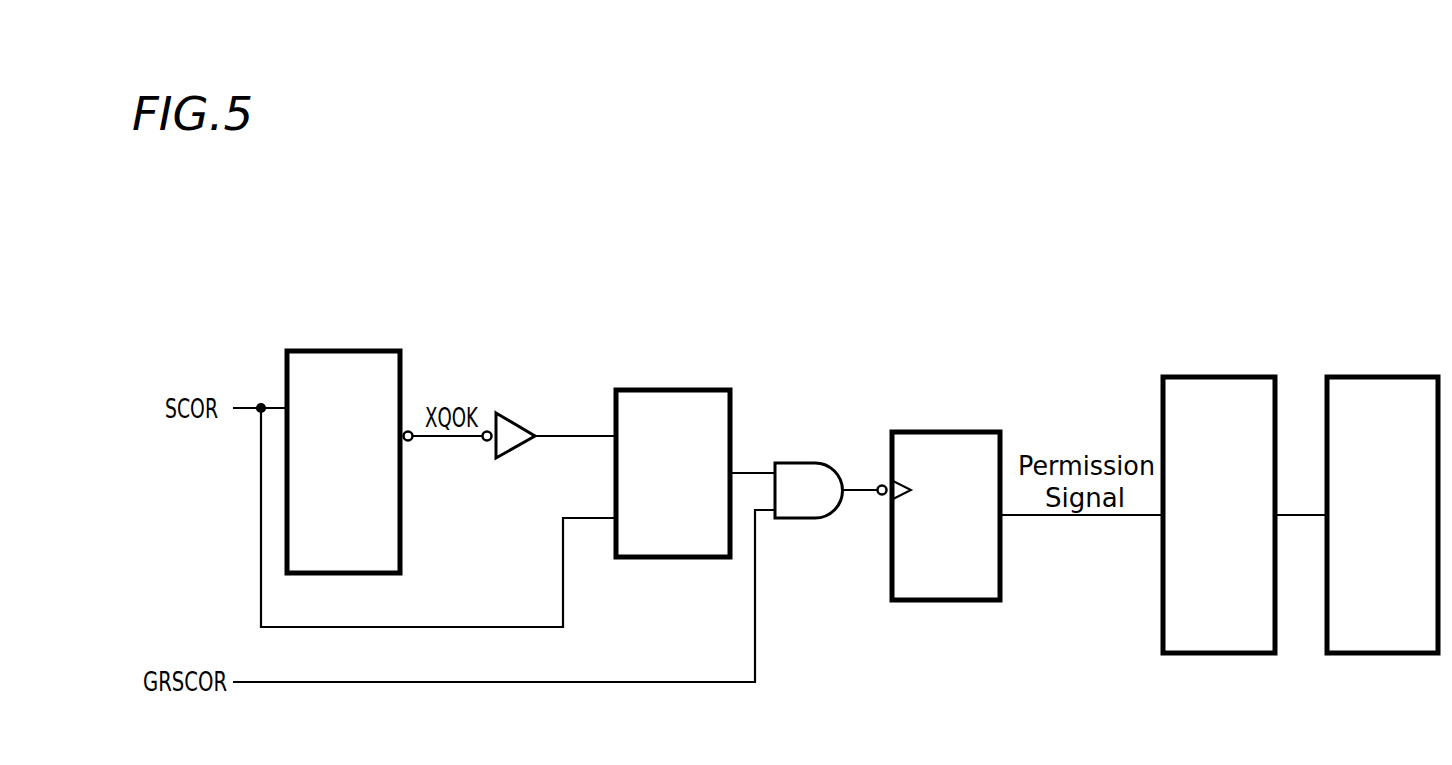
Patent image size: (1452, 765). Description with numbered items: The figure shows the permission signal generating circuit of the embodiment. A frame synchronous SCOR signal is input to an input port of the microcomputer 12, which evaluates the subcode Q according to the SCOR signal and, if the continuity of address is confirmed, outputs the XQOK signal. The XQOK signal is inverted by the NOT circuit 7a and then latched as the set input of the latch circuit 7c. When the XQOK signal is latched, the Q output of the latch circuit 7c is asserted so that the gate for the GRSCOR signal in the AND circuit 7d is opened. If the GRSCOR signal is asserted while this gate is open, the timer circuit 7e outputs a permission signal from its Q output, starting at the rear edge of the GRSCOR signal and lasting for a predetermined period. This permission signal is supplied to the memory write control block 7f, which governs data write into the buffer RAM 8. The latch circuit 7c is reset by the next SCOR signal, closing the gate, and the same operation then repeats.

The microcomputer 12 is at (345, 351).
The NOT circuit 7a is at (519, 425).
The latch circuit 7c is at (674, 390).
The AND circuit 7d is at (800, 463).
The timer circuit 7e is at (942, 432).
The memory write control block 7f is at (1201, 377).
The buffer RAM 8 is at (1394, 377).